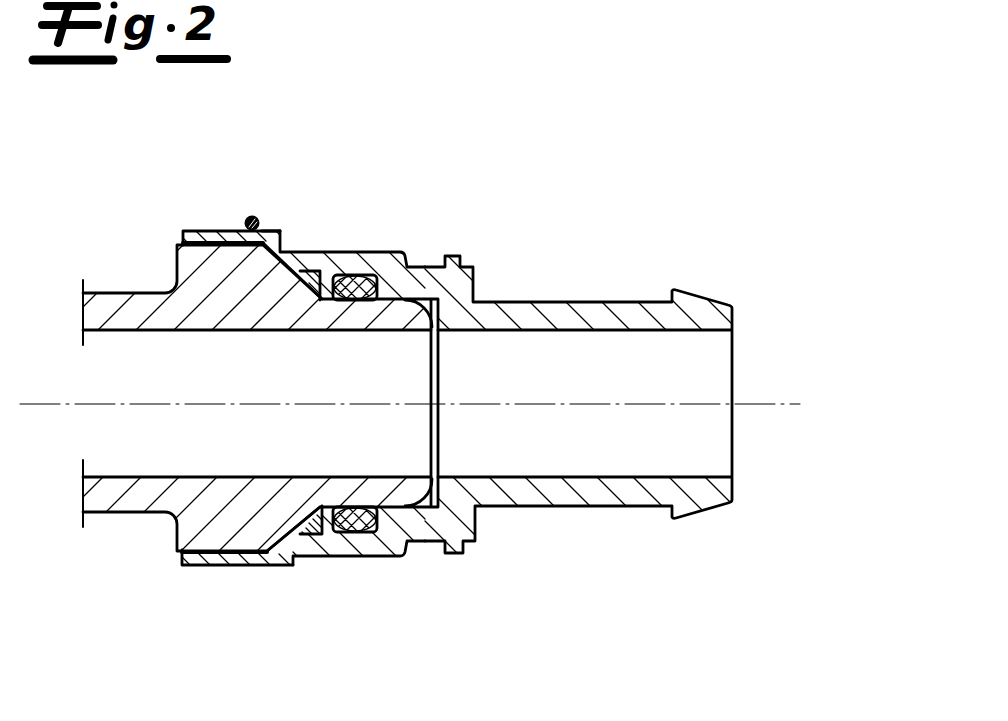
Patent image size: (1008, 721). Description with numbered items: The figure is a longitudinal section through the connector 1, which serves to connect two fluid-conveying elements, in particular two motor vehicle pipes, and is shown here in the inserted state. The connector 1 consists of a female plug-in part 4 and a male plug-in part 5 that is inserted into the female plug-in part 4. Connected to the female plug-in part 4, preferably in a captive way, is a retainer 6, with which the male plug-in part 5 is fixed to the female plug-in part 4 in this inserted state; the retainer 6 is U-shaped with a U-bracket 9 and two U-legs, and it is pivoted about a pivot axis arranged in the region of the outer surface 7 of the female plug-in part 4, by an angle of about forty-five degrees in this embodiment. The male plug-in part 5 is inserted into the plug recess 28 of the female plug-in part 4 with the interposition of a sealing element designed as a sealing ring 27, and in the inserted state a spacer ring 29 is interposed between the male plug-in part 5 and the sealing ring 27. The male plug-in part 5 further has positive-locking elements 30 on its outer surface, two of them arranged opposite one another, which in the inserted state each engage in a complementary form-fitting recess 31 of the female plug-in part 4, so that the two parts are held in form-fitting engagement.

The connector 1 is at (607, 168).
The female plug-in part 4 is at (611, 270).
The male plug-in part 5 is at (120, 263).
The retainer 6 is at (264, 206).
The outer surface 7 is at (350, 246).
The U-bracket 9 is at (251, 213).
The sealing ring 27 is at (360, 540).
The plug recess 28 is at (422, 300).
The spacer ring 29 is at (317, 518).
The positive-locking element 30 is at (202, 250).
The form-fitting recess 31 is at (223, 245).